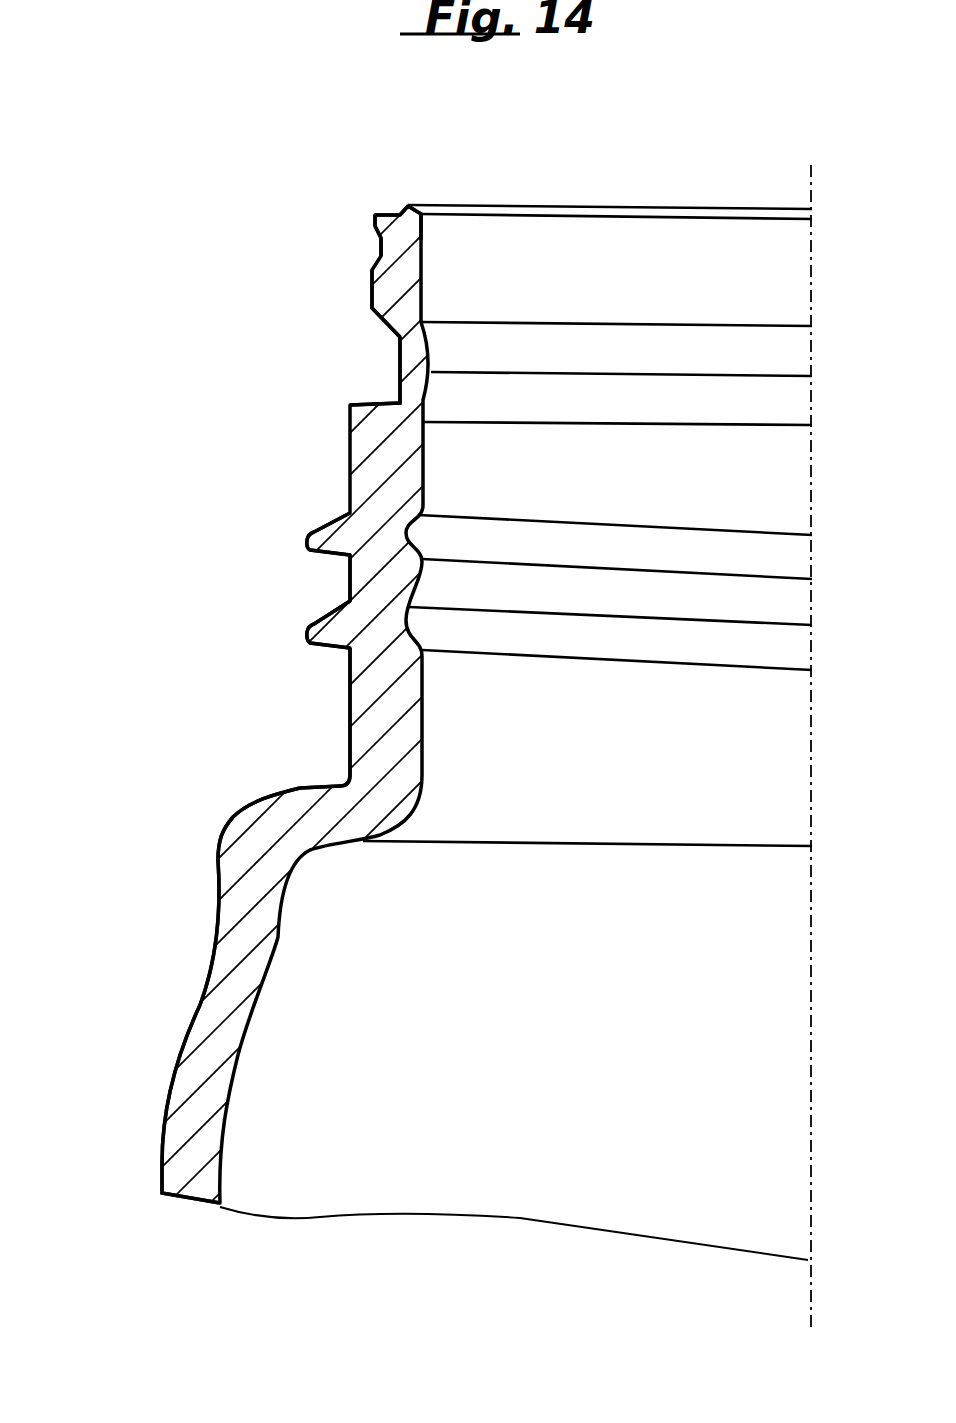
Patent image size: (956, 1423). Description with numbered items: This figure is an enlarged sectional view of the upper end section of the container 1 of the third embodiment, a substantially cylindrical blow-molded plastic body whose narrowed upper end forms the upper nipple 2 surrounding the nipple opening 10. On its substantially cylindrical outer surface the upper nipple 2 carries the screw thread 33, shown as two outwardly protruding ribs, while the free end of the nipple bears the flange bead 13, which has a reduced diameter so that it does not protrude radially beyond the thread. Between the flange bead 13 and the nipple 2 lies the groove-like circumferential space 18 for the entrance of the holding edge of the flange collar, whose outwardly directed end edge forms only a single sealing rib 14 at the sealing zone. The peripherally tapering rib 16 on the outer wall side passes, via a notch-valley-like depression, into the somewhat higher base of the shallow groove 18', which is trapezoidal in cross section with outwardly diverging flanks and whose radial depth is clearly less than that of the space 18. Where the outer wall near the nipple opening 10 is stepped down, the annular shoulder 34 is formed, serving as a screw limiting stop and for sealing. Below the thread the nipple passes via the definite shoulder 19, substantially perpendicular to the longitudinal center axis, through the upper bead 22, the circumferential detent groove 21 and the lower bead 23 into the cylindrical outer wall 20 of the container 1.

The container 1 is at (187, 1225).
The upper nipple 2 is at (348, 700).
The nipple opening 10 is at (668, 298).
The flange bead 13 is at (402, 245).
The sealing rib 14 is at (403, 212).
The rib 16 is at (387, 232).
The groove-like circumferential space 18 is at (291, 311).
The shallow groove 18' is at (282, 211).
The shoulder 19 is at (293, 787).
The outer wall 20 is at (163, 1152).
The detent groove 21 is at (220, 930).
The upper bead 22 is at (223, 820).
The lower bead 23 is at (173, 1053).
The screw thread 33 is at (327, 520).
The annular shoulder 34 is at (360, 402).